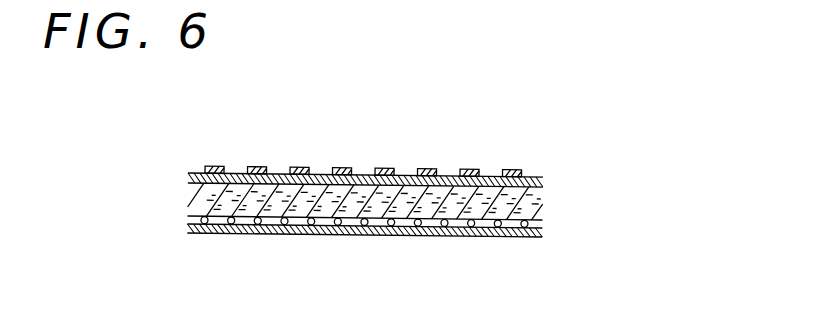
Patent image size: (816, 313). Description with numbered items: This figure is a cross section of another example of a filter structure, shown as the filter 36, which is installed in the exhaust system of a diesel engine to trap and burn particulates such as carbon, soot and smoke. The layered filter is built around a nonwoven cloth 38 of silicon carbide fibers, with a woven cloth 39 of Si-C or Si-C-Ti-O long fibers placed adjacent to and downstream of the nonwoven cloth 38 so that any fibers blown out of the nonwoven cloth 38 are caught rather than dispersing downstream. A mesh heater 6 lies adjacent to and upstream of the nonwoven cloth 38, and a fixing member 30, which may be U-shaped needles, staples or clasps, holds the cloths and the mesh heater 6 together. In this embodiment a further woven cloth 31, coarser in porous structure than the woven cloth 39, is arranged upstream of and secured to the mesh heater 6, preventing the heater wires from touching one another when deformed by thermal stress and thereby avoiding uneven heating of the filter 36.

The mesh heater 6 is at (348, 228).
The fixing member 30 is at (345, 168).
The woven cloth 31 is at (437, 235).
The filter 36 is at (445, 166).
The nonwoven cloth 38 is at (543, 208).
The woven cloth 39 is at (490, 177).